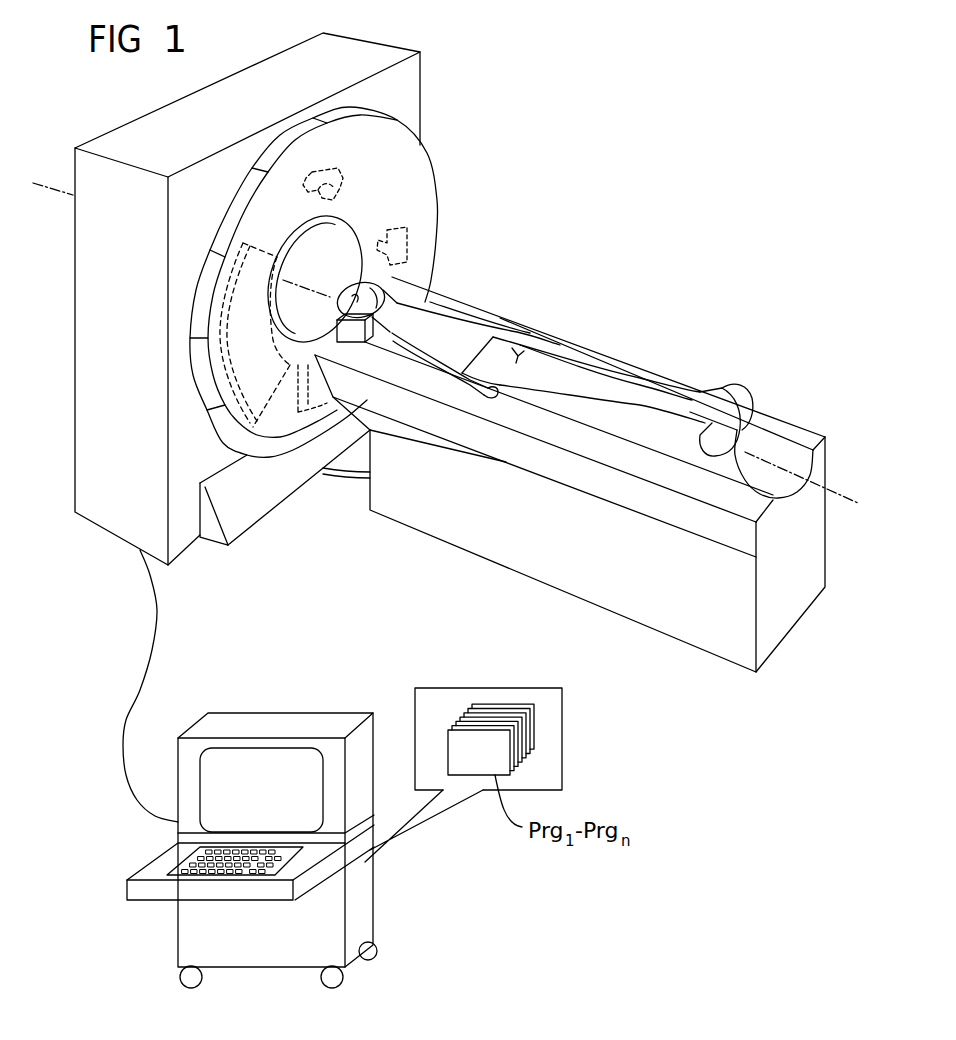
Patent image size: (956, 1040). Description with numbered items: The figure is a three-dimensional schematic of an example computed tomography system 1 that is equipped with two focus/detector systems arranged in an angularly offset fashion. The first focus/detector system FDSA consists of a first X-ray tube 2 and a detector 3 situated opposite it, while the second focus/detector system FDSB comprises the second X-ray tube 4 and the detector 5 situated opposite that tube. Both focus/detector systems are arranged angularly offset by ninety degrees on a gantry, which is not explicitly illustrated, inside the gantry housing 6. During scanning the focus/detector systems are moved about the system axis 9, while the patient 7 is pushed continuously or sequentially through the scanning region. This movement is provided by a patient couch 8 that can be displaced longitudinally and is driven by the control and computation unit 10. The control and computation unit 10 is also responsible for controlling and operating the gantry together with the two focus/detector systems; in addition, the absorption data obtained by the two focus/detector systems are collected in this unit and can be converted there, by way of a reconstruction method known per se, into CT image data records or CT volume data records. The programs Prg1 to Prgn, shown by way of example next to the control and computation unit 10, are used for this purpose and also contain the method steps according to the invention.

The computed tomography system 1 is at (600, 214).
The first X-ray tube 2 is at (337, 180).
The detector 3 is at (312, 397).
The second X-ray tube 4 is at (400, 247).
The detector 5 is at (253, 400).
The gantry housing 6 is at (100, 500).
The patient 7 is at (430, 313).
The patient couch 8 is at (550, 553).
The system axis 9 is at (848, 495).
The control and computation unit 10 is at (358, 910).